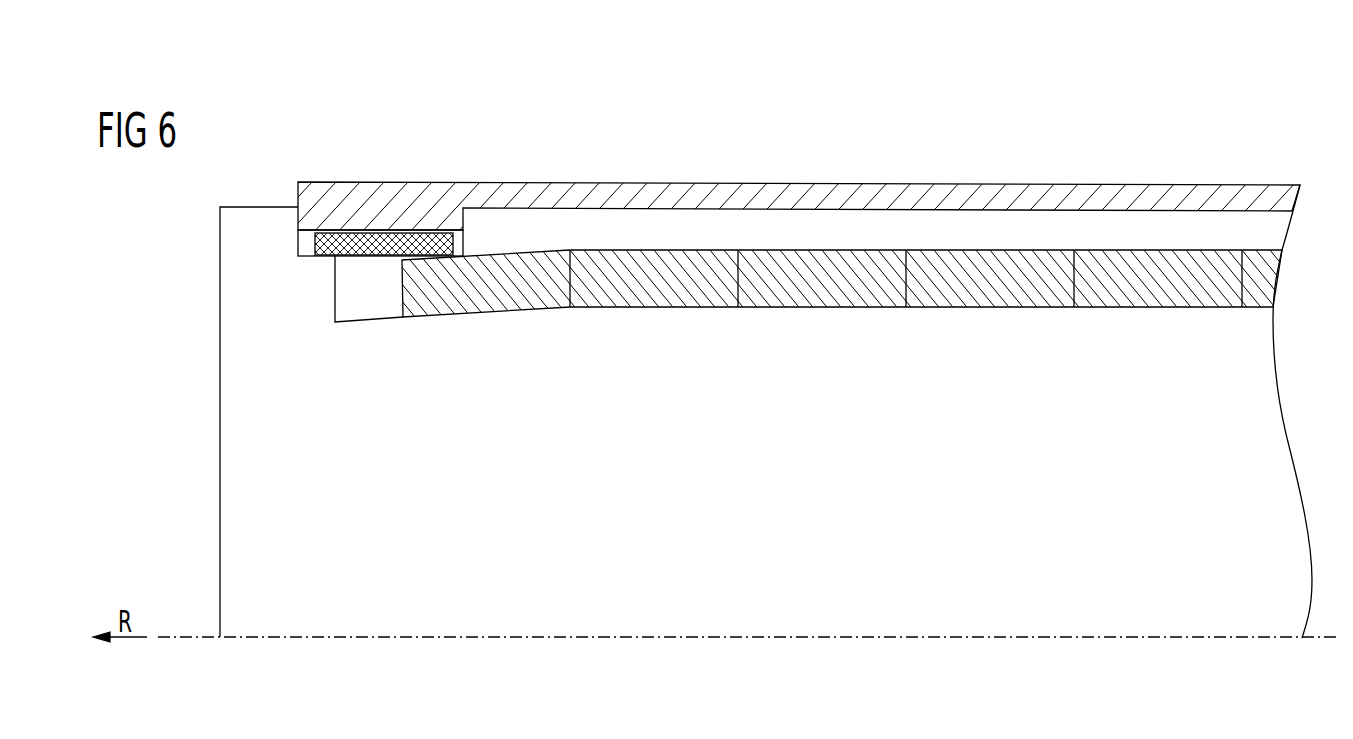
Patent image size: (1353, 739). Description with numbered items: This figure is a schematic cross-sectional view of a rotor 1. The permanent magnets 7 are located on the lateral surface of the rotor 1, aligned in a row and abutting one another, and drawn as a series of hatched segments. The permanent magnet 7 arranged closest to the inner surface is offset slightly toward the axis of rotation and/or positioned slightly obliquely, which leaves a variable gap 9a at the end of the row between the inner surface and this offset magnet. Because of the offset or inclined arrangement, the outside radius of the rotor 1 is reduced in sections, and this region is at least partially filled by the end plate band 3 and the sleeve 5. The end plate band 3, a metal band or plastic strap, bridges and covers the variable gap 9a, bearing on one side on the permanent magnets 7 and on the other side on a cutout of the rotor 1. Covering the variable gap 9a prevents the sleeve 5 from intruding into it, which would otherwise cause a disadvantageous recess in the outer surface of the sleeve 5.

The rotor 1 is at (1272, 437).
The end plate band 3 is at (314, 243).
The sleeve 5 is at (710, 195).
The permanent magnet 7 is at (823, 307).
The variable gap 9a is at (366, 308).